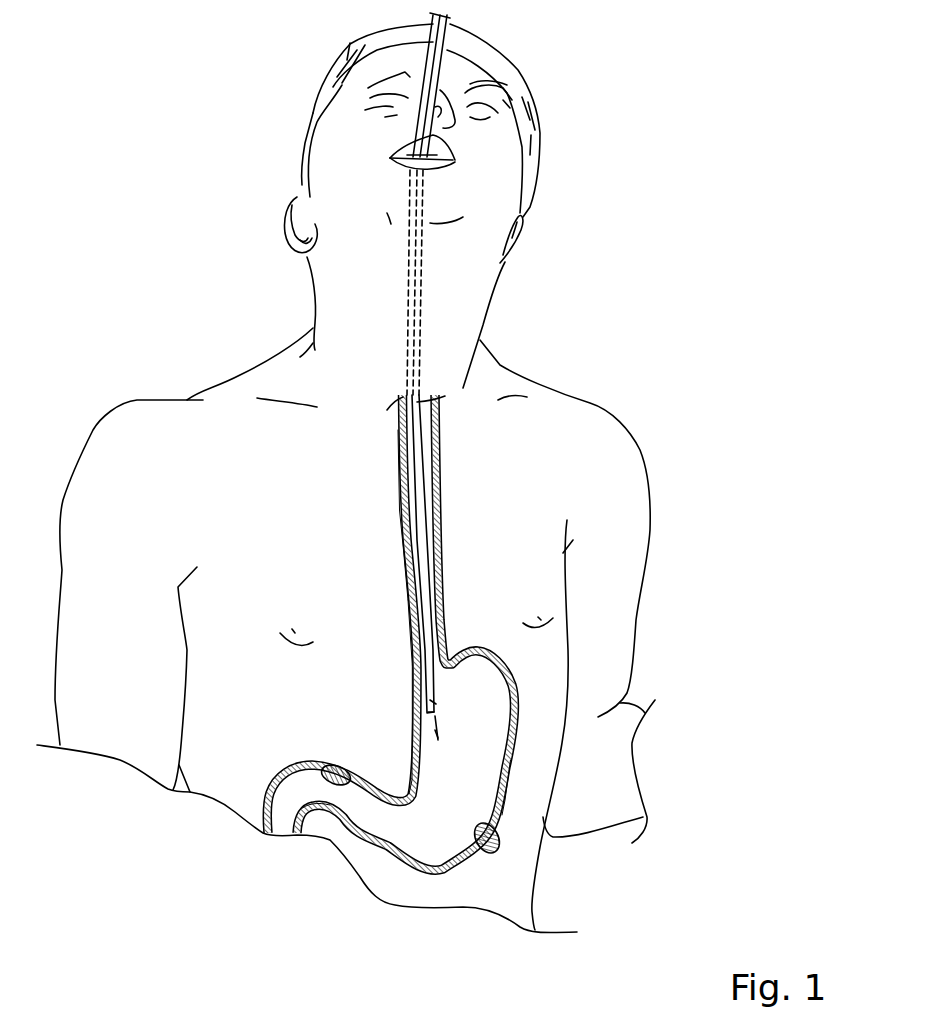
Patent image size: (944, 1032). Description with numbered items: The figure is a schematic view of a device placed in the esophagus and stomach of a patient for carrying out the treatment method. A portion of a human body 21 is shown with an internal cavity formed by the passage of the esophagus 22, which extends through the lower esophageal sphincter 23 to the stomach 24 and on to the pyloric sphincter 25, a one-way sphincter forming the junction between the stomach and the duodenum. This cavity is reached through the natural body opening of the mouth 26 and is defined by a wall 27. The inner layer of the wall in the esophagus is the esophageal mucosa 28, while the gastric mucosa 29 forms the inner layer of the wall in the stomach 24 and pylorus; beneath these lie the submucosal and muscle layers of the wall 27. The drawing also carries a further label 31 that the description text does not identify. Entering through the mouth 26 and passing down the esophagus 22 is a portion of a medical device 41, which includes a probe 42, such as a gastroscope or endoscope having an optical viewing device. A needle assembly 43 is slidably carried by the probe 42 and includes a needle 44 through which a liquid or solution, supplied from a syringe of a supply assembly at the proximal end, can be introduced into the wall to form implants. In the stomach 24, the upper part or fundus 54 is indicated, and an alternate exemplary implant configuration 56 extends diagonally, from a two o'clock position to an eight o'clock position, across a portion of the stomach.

The human body 21 is at (669, 452).
The esophagus 22 is at (453, 556).
The lower esophageal sphincter 23 is at (412, 647).
The stomach 24 is at (488, 646).
The pyloric sphincter 25 is at (333, 830).
The mouth 26 is at (390, 158).
The wall 27 is at (399, 505).
The esophageal mucosa 28 is at (401, 553).
The gastric mucosa 29 is at (417, 790).
The lower esophageal sphincter 31 is at (410, 661).
The medical device 41 is at (416, 61).
The probe 42 is at (420, 293).
The needle assembly 43 is at (451, 717).
The needle 44 is at (437, 732).
The fundus 54 is at (435, 702).
The alternate exemplary implant configuration 56 is at (472, 877).